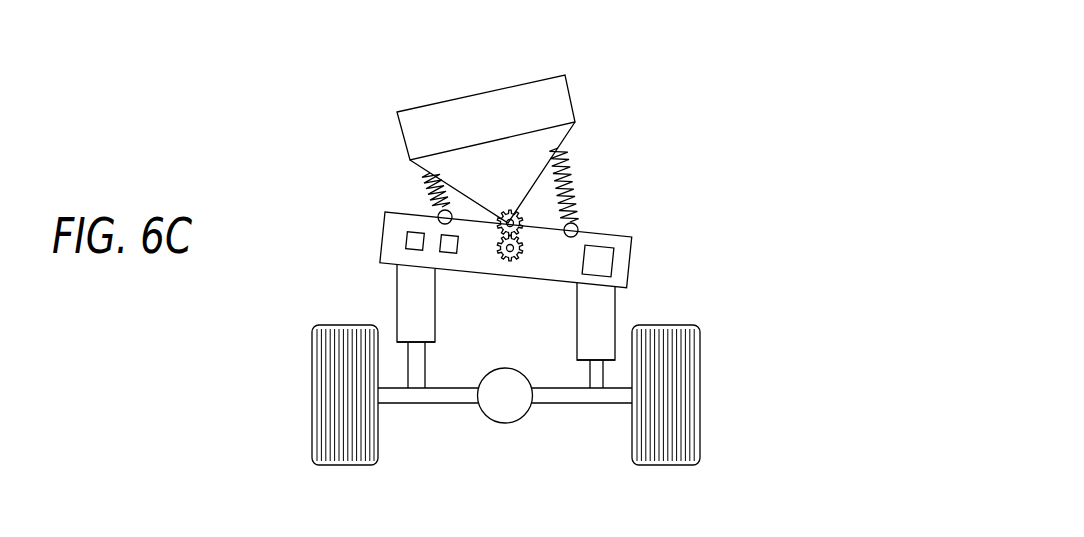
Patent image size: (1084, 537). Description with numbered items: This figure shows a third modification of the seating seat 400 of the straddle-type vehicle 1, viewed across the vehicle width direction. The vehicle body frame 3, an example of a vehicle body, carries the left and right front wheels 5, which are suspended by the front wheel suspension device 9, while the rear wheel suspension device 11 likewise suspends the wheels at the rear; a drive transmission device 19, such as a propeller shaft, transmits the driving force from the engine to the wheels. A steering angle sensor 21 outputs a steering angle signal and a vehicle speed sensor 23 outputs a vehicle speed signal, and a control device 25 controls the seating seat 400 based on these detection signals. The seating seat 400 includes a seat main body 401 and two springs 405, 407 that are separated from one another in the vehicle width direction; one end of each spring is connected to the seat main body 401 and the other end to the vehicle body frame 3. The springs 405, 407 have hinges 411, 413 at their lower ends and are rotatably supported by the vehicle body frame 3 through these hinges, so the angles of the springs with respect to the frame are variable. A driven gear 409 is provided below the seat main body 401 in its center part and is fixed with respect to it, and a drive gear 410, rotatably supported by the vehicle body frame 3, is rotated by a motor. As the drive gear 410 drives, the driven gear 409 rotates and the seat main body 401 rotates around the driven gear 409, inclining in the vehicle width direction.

The straddle-type vehicle 1 is at (356, 87).
The vehicle body frame 3 is at (634, 245).
The front wheels 5 is at (312, 400).
The front wheel suspension device 9 is at (397, 298).
The rear wheel suspension device 11 is at (506, 351).
The drive transmission device 19 is at (508, 423).
The steering angle sensor 21 is at (406, 241).
The vehicle speed sensor 23 is at (448, 253).
The control device 25 is at (613, 263).
The seating seat 400 is at (583, 64).
The seat main body 401 is at (570, 97).
The spring 405 is at (565, 165).
The spring 407 is at (572, 176).
The driven gear 409 is at (521, 217).
The drive gear 410 is at (523, 246).
The hinge 411 is at (579, 229).
The hinge 413 is at (438, 213).